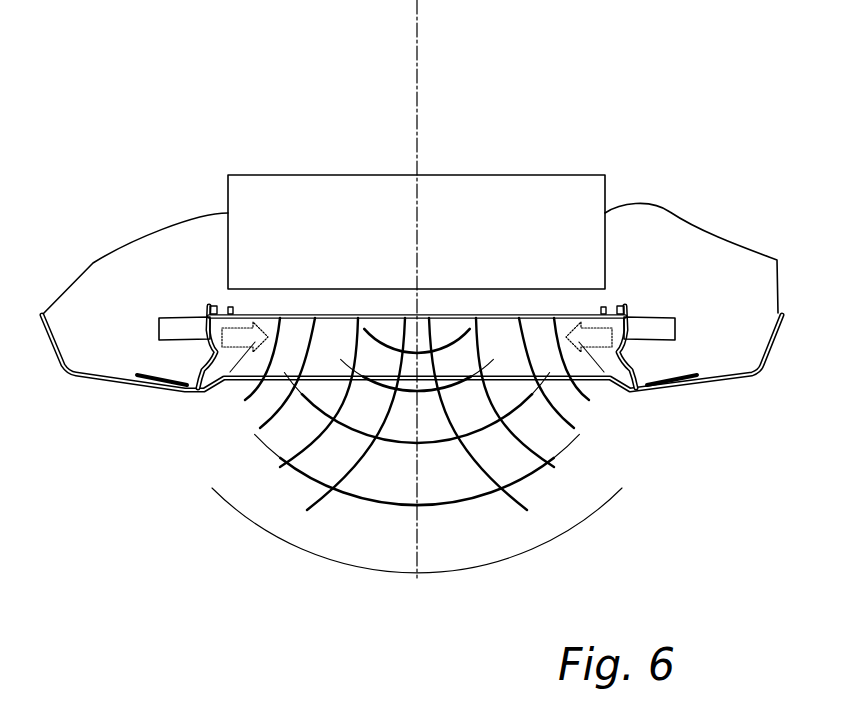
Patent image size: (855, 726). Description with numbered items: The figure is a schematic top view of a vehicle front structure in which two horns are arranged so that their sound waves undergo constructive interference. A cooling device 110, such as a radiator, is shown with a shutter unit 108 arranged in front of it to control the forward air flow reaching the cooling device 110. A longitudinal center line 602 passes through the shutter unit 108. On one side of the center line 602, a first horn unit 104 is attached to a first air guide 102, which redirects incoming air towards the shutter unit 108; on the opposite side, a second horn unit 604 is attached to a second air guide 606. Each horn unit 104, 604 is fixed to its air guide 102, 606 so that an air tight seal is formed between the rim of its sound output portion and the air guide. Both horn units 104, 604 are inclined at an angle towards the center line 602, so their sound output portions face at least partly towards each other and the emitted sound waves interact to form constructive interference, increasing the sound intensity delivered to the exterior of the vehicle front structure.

The air guide 102 is at (628, 393).
The first horn unit 104 is at (643, 325).
The shutter unit 108 is at (298, 318).
The cooling device 110 is at (330, 213).
The longitudinal center line 602 is at (417, 82).
The second horn unit 604 is at (187, 327).
The second air guide 606 is at (212, 360).